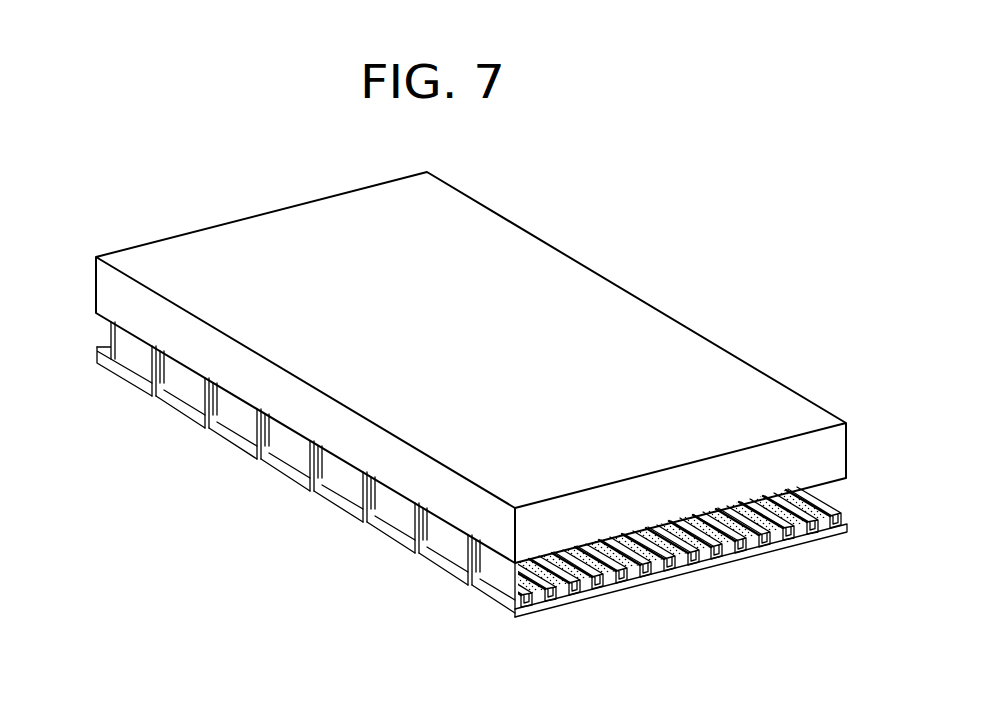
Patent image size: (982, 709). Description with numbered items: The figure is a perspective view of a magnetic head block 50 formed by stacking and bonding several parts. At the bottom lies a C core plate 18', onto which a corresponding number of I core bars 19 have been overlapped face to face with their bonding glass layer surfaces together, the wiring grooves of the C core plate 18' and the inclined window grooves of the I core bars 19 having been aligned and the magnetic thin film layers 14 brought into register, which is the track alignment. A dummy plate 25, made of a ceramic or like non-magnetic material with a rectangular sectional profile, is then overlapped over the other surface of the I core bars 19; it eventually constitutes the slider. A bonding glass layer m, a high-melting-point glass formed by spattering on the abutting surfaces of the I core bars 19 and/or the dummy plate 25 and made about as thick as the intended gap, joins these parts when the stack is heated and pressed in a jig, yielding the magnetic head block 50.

The magnetic head block 50 is at (207, 207).
The dummy plate 25 is at (618, 297).
The magnetic thin film layer 14 is at (152, 387).
The I core bar 19 is at (292, 451).
The C core plate 18' is at (472, 482).
The bonding glass layer m is at (822, 506).